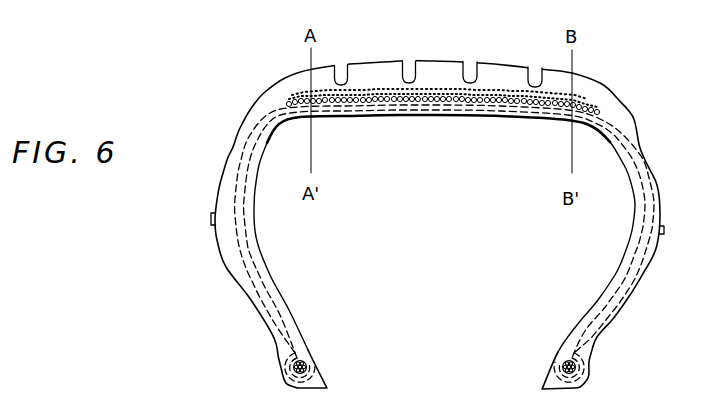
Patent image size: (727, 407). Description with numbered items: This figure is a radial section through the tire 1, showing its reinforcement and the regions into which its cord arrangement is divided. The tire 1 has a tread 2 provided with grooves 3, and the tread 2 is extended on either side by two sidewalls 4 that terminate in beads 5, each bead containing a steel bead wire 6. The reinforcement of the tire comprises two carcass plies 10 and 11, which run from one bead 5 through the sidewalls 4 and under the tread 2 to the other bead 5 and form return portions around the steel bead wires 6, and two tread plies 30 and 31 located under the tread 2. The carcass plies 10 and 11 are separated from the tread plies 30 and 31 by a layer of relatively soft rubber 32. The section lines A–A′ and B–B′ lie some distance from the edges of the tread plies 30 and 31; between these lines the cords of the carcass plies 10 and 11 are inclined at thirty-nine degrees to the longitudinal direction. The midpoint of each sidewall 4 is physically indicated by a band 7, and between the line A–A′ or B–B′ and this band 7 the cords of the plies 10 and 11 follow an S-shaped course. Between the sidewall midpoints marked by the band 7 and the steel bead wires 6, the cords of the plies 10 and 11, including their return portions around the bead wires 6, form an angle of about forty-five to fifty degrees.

The tire 1 is at (434, 209).
The tread 2 is at (303, 80).
The grooves 3 is at (411, 63).
The sidewalls 4 is at (229, 189).
The beads 5 is at (317, 348).
The steel bead wires 6 is at (294, 368).
The band 7 is at (209, 220).
The carcass ply 10 is at (252, 256).
The carcass ply 11 is at (237, 250).
The tread ply 30 is at (597, 108).
The tread ply 31 is at (582, 102).
The layer of relatively soft rubber 32 is at (597, 117).